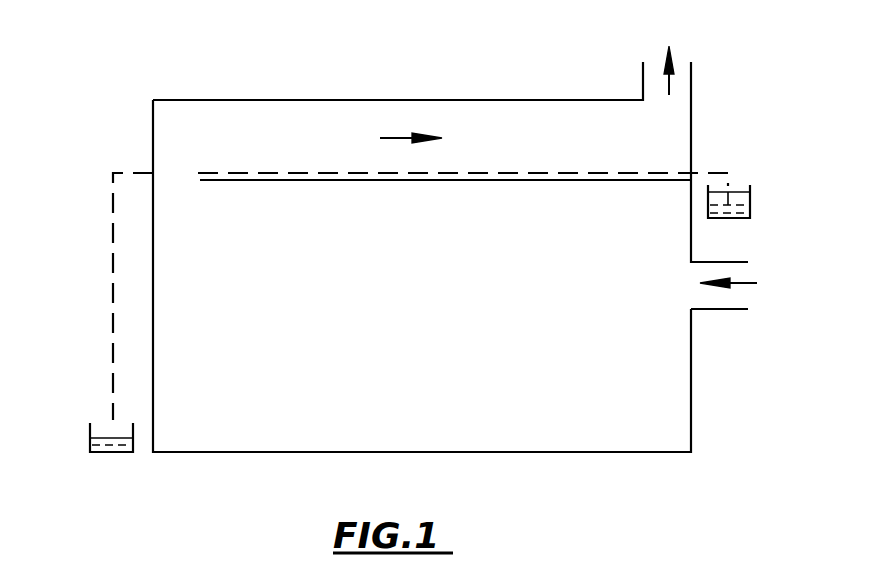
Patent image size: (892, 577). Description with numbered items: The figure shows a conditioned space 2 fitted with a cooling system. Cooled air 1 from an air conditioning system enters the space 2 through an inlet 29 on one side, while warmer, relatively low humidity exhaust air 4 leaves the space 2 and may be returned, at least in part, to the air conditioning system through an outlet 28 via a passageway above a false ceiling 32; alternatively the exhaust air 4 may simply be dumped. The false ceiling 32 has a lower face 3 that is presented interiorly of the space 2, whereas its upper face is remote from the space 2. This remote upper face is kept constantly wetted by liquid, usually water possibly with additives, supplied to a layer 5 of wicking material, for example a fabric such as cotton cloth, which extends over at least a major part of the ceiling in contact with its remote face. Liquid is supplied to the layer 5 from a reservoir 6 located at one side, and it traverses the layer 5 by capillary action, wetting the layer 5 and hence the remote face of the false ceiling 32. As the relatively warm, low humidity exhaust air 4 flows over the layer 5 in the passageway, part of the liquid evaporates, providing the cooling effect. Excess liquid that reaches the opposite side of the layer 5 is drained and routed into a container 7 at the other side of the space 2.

The cooled air 1 is at (748, 285).
The space 2 is at (450, 257).
The lower face 3 is at (320, 180).
The exhaust air 4 is at (411, 126).
The layer of wicking material 5 is at (245, 173).
The reservoir 6 is at (750, 207).
The container 7 is at (90, 440).
The outlet 28 is at (178, 180).
The inlet 29 is at (730, 302).
The false ceiling 32 is at (508, 180).